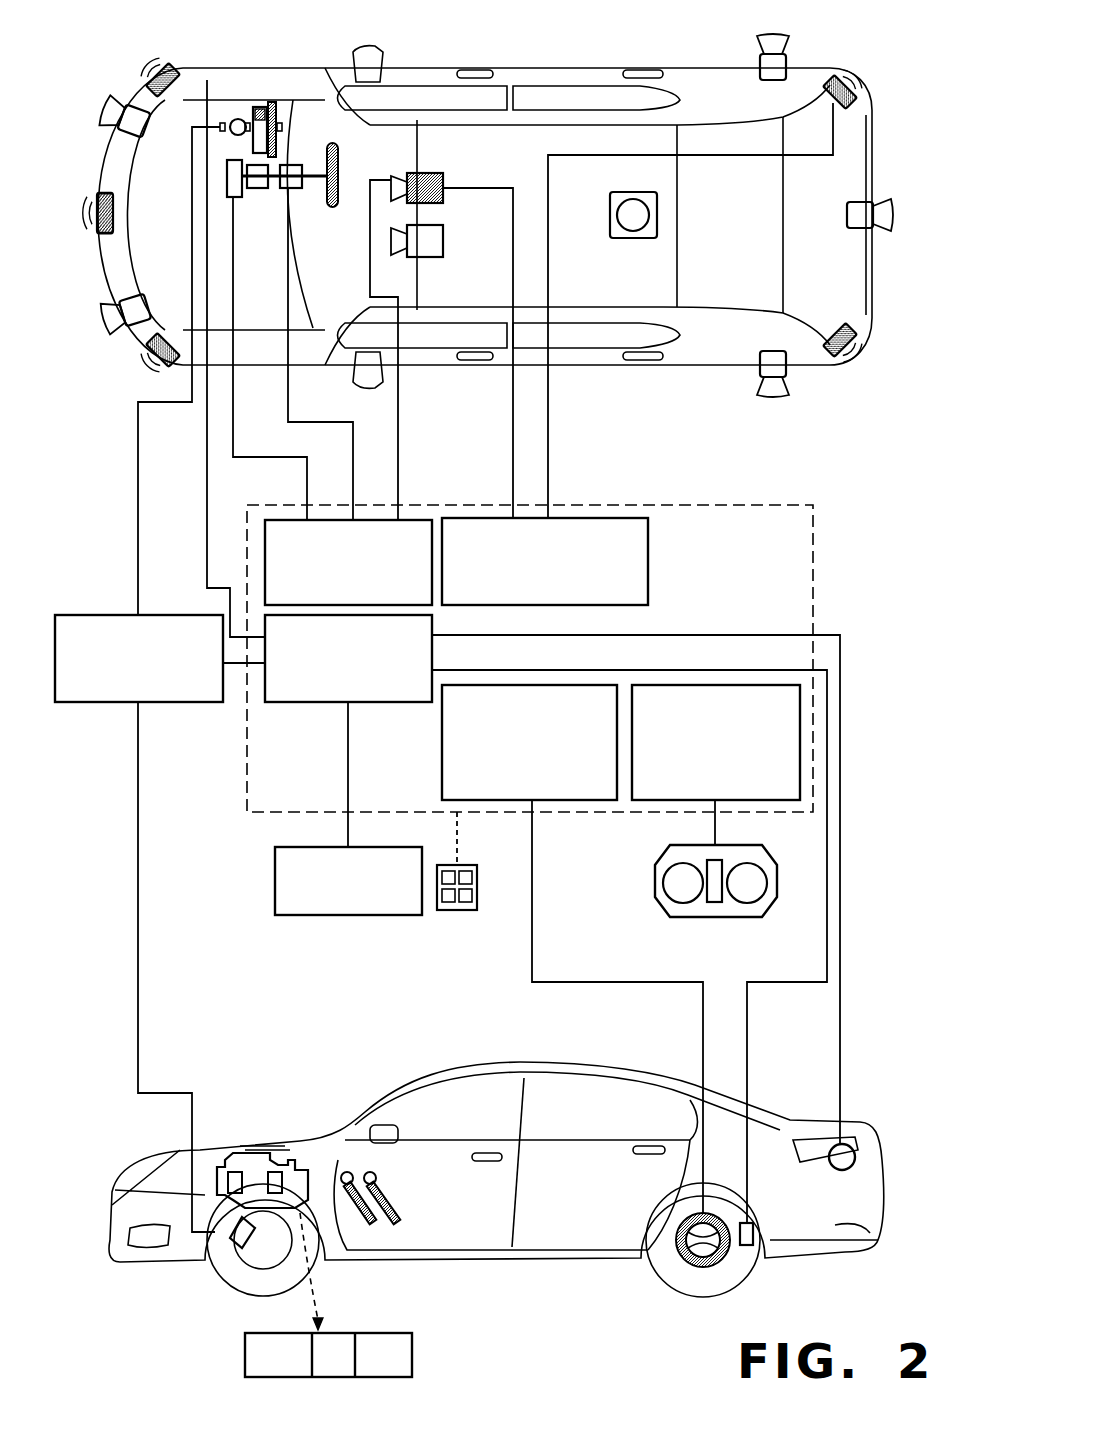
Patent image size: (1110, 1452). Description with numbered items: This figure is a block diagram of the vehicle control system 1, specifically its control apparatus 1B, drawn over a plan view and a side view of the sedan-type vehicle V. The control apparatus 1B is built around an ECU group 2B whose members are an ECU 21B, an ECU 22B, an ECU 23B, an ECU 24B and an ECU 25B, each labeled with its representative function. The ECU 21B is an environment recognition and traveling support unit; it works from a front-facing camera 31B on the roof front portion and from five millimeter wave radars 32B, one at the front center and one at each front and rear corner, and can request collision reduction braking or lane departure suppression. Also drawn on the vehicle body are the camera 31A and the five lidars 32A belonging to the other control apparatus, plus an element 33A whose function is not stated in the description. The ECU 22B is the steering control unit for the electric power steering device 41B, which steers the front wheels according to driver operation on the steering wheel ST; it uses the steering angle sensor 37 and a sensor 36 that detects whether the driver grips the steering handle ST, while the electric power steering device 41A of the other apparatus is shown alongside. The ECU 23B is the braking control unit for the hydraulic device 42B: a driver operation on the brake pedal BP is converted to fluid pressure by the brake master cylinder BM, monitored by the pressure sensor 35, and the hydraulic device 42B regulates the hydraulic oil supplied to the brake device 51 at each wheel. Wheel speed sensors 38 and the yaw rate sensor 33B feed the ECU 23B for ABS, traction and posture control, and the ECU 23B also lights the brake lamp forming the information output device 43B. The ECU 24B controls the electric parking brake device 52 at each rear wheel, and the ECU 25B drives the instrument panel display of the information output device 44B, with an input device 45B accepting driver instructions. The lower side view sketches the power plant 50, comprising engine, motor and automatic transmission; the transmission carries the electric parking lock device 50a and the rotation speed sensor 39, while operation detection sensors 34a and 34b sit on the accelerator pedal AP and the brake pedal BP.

The vehicle control system 1 is at (900, 368).
The control apparatus 1B is at (575, 640).
The ECU group 2B is at (450, 505).
The ECU 21B is at (605, 518).
The ECU 22B is at (282, 519).
The ECU 23B is at (280, 703).
The ECU 24B is at (442, 762).
The ECU 25B is at (653, 801).
The camera 31A is at (425, 258).
The camera 31B is at (430, 173).
The lidar 32A is at (140, 136).
The millimeter wave radar 32B is at (172, 68).
The GNSS receiver 33A is at (615, 238).
The yaw rate sensor 33B is at (322, 916).
The operation detection sensor 34a is at (342, 1170).
The operation detection sensor 34b is at (378, 1174).
The pressure sensor 35 is at (258, 106).
The sensor 36 is at (340, 165).
The steering angle sensor 37 is at (235, 198).
The wheel speed sensor 38 is at (753, 1246).
The rotation speed sensor 39 is at (270, 1170).
The electric power steering device 41A is at (257, 189).
The electric power steering device 41B is at (295, 164).
The hydraulic device 42B is at (98, 614).
The information output device 43B is at (857, 1156).
The information output device 44B is at (668, 918).
The input device 45B is at (460, 911).
The power plant 50 is at (297, 1157).
The electric parking lock device 50a is at (230, 1170).
The brake device 51 is at (236, 1250).
The electric parking brake device 52 is at (690, 1268).
The accelerator pedal AP is at (373, 1223).
The brake pedal BP is at (397, 1223).
The brake master cylinder BM is at (272, 101).
The steering wheel ST is at (339, 150).
The vehicle V is at (885, 101).